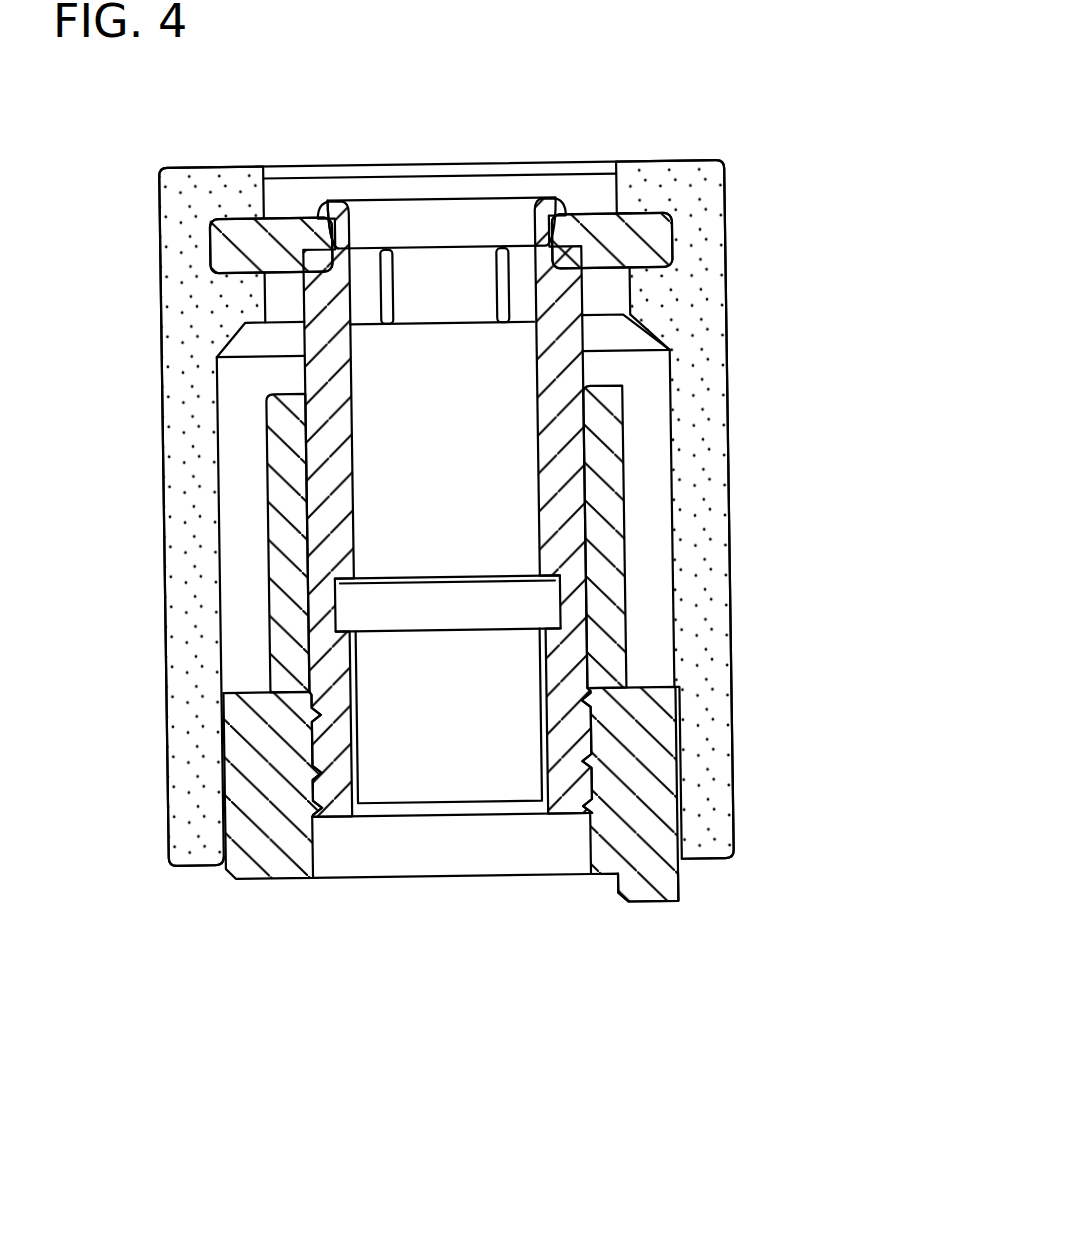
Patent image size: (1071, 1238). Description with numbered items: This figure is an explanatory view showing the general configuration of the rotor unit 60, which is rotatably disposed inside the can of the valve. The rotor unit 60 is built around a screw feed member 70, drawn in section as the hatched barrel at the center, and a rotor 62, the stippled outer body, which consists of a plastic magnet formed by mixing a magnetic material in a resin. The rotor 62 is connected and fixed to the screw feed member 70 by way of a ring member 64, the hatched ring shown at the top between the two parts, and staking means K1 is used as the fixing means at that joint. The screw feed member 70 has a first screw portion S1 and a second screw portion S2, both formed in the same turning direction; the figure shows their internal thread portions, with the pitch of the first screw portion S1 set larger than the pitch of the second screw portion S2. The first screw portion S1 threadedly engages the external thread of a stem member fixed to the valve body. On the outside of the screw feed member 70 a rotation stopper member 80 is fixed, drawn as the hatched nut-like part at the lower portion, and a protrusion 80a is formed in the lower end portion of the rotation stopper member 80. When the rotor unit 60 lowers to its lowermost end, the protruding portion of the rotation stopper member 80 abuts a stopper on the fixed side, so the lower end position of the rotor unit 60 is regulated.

The rotor unit 60 is at (775, 428).
The rotor 62 is at (708, 598).
The ring member 64 is at (628, 214).
The screw feed member 70 is at (317, 528).
The rotation stopper member 80 is at (665, 860).
The protrusion 80a is at (649, 903).
The staking means K1 is at (328, 200).
The first screw portion S1 is at (550, 743).
The second screw portion S2 is at (503, 288).